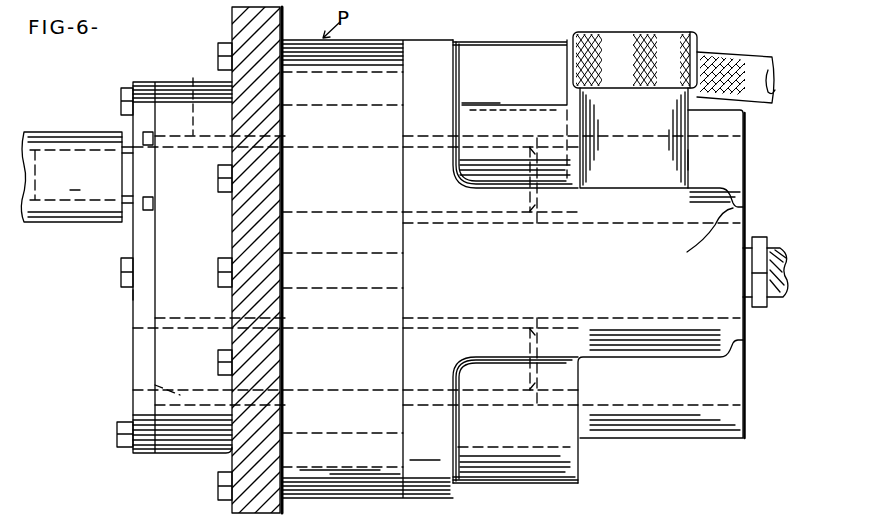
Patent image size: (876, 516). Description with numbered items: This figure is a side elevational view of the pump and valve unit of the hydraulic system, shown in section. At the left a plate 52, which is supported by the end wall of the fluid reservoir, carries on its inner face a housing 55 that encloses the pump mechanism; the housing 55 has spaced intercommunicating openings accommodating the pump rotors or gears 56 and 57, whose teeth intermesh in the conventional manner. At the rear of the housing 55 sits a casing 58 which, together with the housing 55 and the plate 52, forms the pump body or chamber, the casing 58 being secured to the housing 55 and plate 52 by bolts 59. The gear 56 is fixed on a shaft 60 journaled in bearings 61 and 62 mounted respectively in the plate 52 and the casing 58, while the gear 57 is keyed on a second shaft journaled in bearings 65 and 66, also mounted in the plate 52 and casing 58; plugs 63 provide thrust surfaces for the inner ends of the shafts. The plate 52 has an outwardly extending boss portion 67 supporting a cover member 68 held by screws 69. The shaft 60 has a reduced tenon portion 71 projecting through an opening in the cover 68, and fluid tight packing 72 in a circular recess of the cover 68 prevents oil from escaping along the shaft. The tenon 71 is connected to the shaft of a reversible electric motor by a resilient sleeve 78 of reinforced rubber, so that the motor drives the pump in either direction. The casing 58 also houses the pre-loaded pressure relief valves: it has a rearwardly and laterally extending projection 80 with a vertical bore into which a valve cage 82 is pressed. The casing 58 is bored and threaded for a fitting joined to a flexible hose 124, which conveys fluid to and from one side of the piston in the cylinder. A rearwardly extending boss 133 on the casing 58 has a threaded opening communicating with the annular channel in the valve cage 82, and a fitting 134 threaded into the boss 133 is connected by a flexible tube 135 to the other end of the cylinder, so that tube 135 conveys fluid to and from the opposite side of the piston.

The plate 52 is at (232, 505).
The housing 55 is at (358, 502).
The pump rotor or gear 56 is at (353, 80).
The pump rotor or gear 57 is at (383, 465).
The casing or housing 58 is at (477, 44).
The bolts 59 is at (222, 43).
The shaft 60 is at (368, 147).
The bearing or bushing 61 is at (194, 96).
The bearing or bushing 62 is at (488, 140).
The abutments or plugs 63 is at (715, 138).
The bearing 65 is at (183, 393).
The bearing 66 is at (478, 400).
The boss portion 67 is at (167, 62).
The cover member 68 is at (133, 296).
The screws or bolts 69 is at (121, 96).
The tenon portion 71 is at (75, 195).
The packing or sealing material 72 is at (140, 215).
The resilient sleeve 78 is at (45, 132).
The projection 80 is at (663, 193).
The valve cage 82 is at (690, 160).
The flexible tube or hose 124 is at (722, 55).
The boss 133 is at (677, 278).
The fitting 134 is at (787, 218).
The flexible tube 135 is at (778, 297).